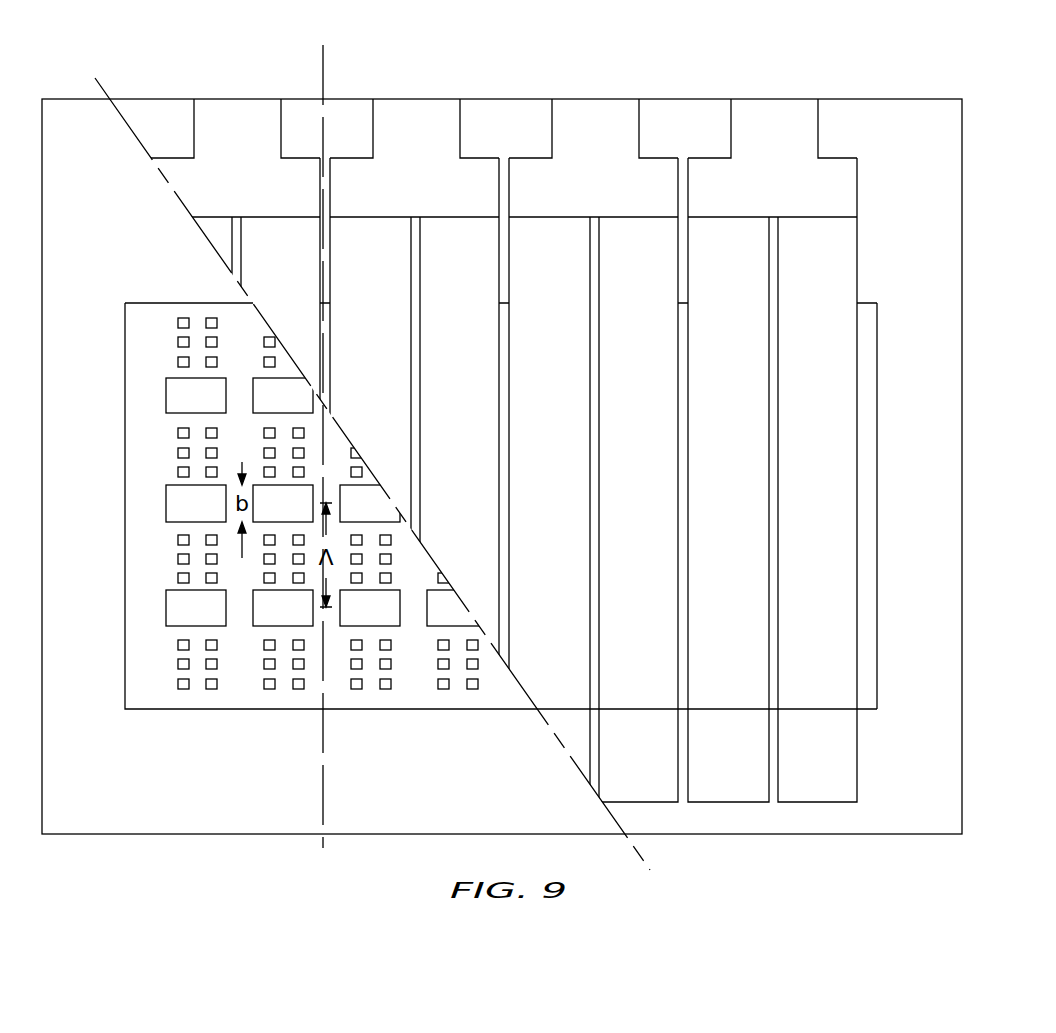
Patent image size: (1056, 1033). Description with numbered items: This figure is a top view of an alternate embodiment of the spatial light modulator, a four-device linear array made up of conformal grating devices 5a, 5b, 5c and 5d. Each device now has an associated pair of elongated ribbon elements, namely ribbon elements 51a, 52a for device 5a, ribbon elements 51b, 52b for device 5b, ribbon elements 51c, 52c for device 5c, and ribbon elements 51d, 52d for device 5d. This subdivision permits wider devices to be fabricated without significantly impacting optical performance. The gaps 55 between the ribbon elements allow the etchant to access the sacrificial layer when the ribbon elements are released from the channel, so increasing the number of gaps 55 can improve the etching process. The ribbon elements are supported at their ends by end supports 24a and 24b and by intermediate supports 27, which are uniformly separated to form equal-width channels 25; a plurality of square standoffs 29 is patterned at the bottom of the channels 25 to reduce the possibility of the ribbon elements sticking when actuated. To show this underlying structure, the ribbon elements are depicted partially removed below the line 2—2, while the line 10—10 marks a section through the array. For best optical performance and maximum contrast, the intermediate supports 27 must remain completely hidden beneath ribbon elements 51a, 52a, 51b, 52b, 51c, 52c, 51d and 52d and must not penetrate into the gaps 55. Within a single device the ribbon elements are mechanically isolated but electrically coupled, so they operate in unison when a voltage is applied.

The line 2— 2 is at (376, 473).
The conformal grating device 5a is at (315, 93).
The conformal grating device 5b is at (492, 93).
The conformal grating device 5c is at (665, 93).
The conformal grating device 5d is at (693, 93).
The section line 10- 10 is at (322, 45).
The end support 24a is at (870, 283).
The end support 24b is at (867, 758).
The channel 25 is at (150, 347).
The intermediate support 27 is at (183, 408).
The square standoff 29 is at (183, 689).
The elongated ribbon element 51a is at (212, 232).
The elongated ribbon element 51b is at (346, 267).
The elongated ribbon element 51c is at (528, 267).
The elongated ribbon element 51d is at (708, 267).
The elongated ribbon element 52a is at (256, 267).
The elongated ribbon element 52b is at (436, 267).
The elongated ribbon element 52c is at (618, 267).
The elongated ribbon element 52d is at (798, 267).
The gap 55 is at (682, 482).